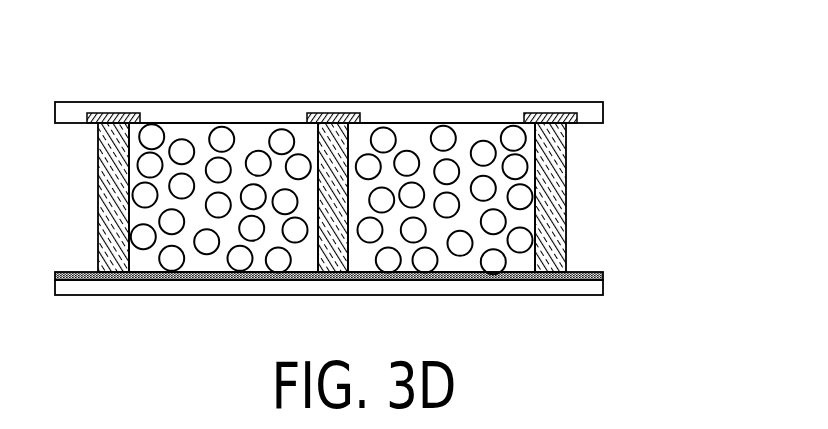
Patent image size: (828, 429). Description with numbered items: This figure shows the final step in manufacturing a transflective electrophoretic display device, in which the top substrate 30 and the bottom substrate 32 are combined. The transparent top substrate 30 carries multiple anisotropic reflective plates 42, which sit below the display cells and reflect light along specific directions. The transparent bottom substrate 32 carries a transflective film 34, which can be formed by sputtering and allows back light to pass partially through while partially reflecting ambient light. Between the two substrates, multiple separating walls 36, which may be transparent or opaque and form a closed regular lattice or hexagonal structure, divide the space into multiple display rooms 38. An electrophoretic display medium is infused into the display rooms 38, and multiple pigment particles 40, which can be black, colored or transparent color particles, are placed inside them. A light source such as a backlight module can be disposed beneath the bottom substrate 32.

The top substrate 30 is at (596, 112).
The bottom substrate 32 is at (583, 288).
The transflective film 34 is at (605, 277).
The separating walls 36 is at (557, 185).
The display rooms 38 is at (523, 218).
The pigment particles 40 is at (517, 163).
The anisotropic reflective plates 42 is at (552, 119).